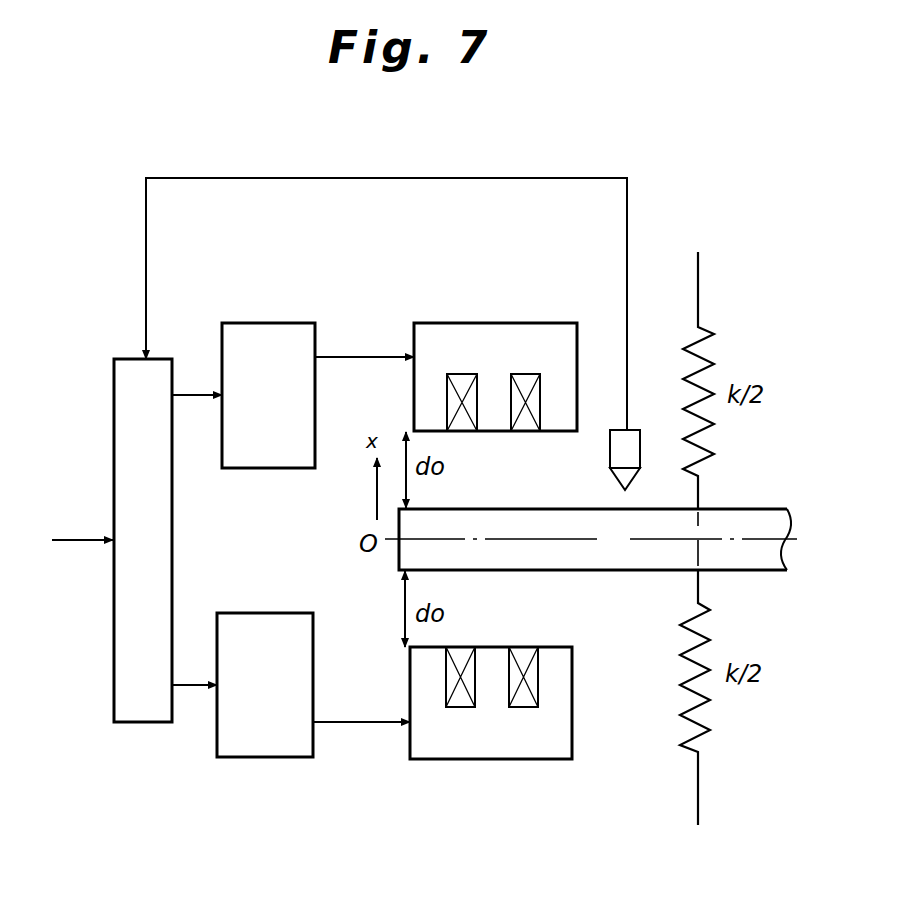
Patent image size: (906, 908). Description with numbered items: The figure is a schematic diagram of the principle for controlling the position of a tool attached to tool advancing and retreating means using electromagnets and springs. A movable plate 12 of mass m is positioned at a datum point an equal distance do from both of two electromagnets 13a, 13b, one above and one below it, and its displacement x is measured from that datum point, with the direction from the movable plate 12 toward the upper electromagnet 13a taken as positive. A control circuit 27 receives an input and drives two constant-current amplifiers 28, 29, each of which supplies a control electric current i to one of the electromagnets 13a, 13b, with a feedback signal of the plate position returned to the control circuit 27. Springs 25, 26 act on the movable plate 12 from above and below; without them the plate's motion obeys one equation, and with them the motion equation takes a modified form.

The movable plate 12 is at (628, 555).
The electromagnet 13a is at (520, 366).
The electromagnet 13b is at (515, 746).
The spring 25 is at (706, 428).
The spring 26 is at (700, 688).
The control circuit 27 is at (133, 375).
The constant-current amplifier 28 is at (265, 325).
The constant-current amplifier 29 is at (262, 623).